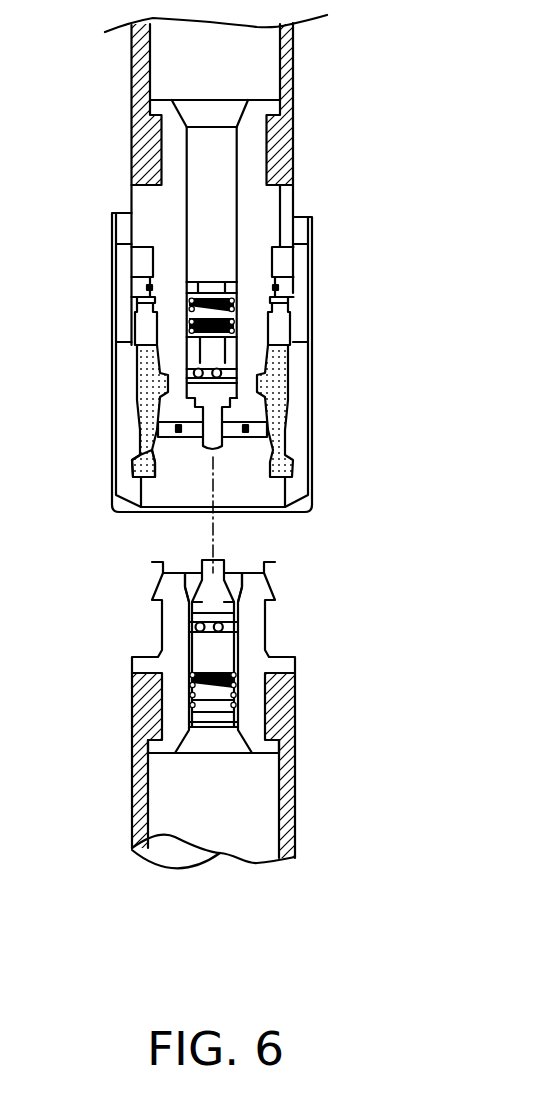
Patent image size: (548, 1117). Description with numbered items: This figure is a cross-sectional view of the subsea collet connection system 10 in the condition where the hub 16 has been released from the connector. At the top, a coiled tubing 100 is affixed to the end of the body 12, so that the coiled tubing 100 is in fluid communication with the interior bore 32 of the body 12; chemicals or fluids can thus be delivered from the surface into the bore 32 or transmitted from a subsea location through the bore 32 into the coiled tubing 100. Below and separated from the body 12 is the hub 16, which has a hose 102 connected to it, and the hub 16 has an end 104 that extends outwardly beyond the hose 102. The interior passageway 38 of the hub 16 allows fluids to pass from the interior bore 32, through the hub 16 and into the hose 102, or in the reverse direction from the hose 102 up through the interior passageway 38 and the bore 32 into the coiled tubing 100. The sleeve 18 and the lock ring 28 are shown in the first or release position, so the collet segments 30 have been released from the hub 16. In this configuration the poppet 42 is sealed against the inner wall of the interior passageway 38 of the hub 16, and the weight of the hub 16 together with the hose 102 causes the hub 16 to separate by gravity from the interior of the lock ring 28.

The subsea collet connection system 10 is at (398, 243).
The body 12 is at (277, 197).
The hub 16 is at (287, 663).
The sleeve 18 is at (303, 298).
The lock ring 28 is at (302, 420).
The collet segments 30 is at (142, 457).
The interior bore 32 is at (183, 170).
The interior passageway 38 is at (238, 713).
The poppet 42 is at (213, 573).
The coiled tubing 100 is at (293, 140).
The hose 102 is at (298, 787).
The end 104 is at (258, 563).